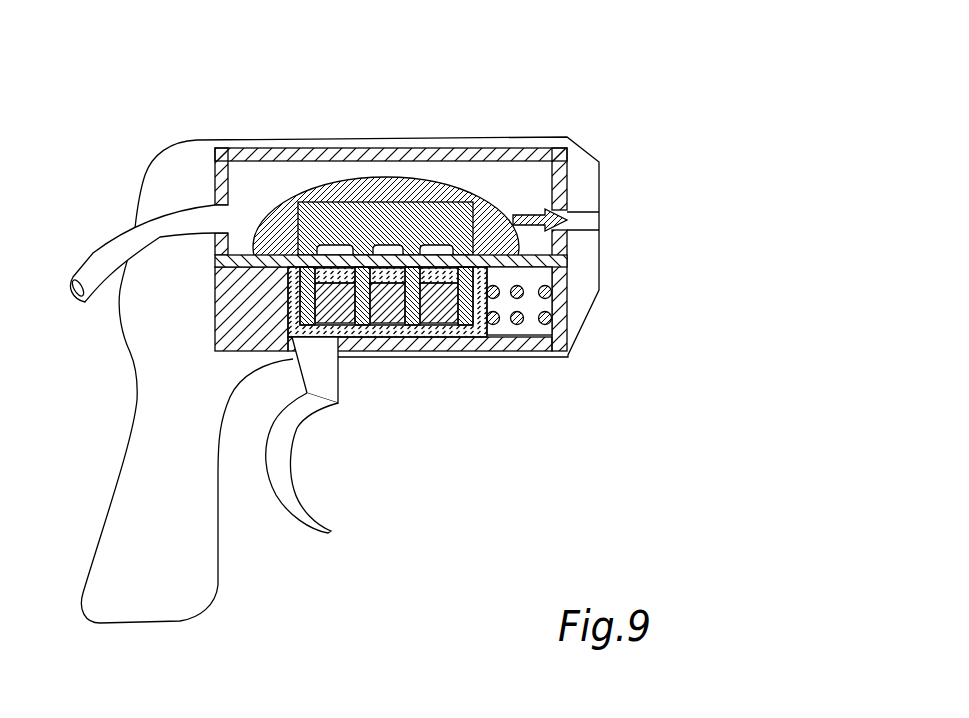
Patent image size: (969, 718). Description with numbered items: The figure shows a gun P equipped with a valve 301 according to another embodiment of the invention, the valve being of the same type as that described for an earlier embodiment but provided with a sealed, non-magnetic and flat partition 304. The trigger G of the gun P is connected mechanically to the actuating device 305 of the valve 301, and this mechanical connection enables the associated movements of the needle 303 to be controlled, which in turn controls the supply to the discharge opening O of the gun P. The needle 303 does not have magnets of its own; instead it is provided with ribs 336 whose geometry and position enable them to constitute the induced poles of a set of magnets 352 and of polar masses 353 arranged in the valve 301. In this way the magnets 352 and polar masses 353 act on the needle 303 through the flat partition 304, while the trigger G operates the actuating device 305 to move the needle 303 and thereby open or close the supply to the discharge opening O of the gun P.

The valve 301 is at (593, 104).
The needle 303 is at (487, 225).
The ribs 336 is at (412, 202).
The partition 304 is at (533, 262).
The set of magnets 352 is at (450, 317).
The polar masses 353 is at (362, 320).
The actuating device 305 is at (385, 312).
The discharge opening O is at (590, 223).
The trigger G is at (278, 473).
The gun P is at (153, 552).